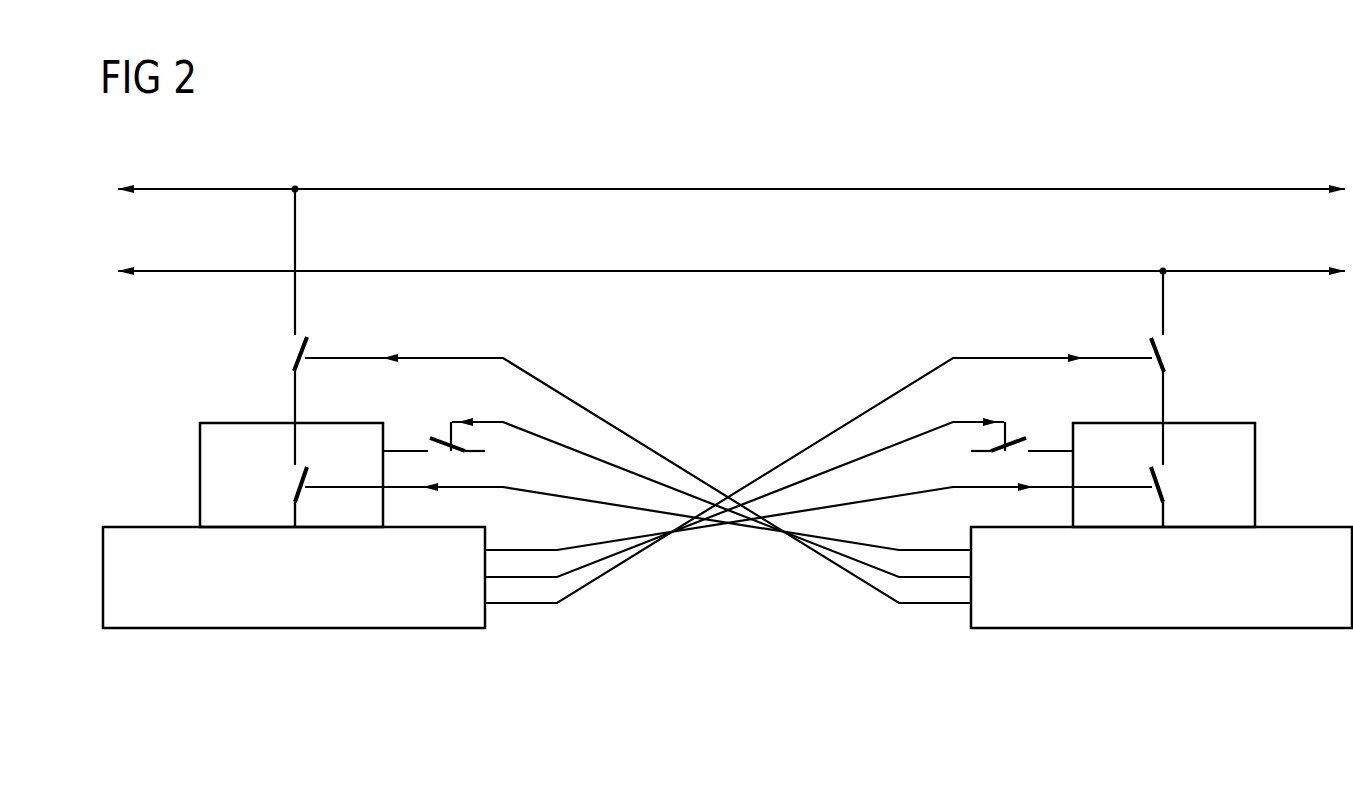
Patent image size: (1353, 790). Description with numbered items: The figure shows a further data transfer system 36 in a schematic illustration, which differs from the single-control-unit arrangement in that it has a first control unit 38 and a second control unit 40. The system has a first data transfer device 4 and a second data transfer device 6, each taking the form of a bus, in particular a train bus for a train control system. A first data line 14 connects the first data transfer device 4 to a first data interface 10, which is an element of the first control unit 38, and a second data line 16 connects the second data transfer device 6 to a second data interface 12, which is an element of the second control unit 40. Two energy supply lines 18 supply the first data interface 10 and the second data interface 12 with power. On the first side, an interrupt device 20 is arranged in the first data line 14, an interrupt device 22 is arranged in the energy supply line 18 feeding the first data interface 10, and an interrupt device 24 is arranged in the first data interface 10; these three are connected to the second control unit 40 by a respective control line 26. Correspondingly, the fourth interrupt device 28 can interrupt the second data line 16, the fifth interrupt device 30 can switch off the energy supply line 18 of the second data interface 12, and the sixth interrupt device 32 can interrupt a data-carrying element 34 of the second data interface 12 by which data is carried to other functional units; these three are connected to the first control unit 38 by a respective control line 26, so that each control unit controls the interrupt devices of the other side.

The first data transfer device 4 is at (560, 189).
The second data transfer device 6 is at (650, 271).
The further data transfer system 36 is at (853, 147).
The first data line 14 is at (295, 310).
The second data line 16 is at (1163, 310).
The interrupt device 20 is at (287, 347).
The fourth interrupt device 28 is at (1172, 347).
The interrupt device 24 is at (292, 483).
The sixth interrupt device 32 is at (1168, 483).
The energy supply line 18 is at (410, 450).
The interrupt device 22 is at (442, 453).
The fifth interrupt device 30 is at (1014, 453).
The control line 26 is at (577, 392).
The data-carrying element 34 is at (295, 517).
The first data interface 10 is at (200, 487).
The second data interface 12 is at (1255, 481).
The first control unit 38 is at (275, 628).
The second control unit 40 is at (1145, 628).